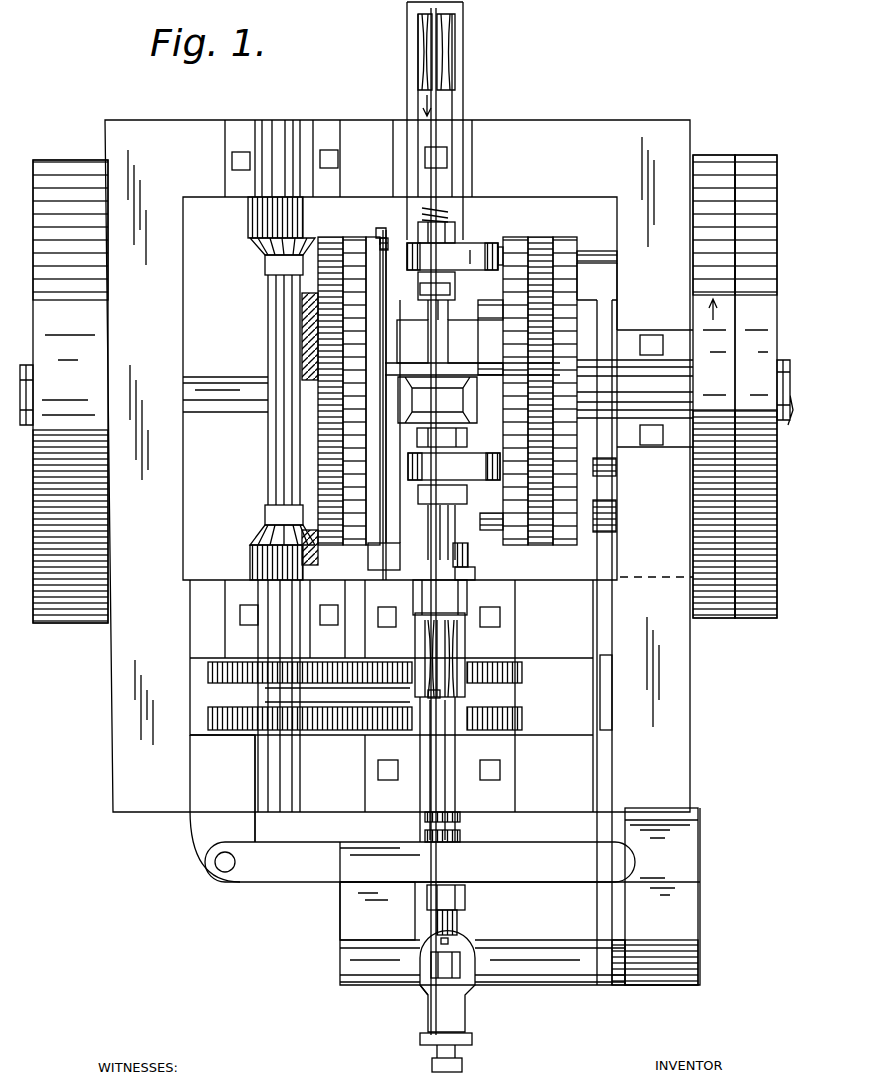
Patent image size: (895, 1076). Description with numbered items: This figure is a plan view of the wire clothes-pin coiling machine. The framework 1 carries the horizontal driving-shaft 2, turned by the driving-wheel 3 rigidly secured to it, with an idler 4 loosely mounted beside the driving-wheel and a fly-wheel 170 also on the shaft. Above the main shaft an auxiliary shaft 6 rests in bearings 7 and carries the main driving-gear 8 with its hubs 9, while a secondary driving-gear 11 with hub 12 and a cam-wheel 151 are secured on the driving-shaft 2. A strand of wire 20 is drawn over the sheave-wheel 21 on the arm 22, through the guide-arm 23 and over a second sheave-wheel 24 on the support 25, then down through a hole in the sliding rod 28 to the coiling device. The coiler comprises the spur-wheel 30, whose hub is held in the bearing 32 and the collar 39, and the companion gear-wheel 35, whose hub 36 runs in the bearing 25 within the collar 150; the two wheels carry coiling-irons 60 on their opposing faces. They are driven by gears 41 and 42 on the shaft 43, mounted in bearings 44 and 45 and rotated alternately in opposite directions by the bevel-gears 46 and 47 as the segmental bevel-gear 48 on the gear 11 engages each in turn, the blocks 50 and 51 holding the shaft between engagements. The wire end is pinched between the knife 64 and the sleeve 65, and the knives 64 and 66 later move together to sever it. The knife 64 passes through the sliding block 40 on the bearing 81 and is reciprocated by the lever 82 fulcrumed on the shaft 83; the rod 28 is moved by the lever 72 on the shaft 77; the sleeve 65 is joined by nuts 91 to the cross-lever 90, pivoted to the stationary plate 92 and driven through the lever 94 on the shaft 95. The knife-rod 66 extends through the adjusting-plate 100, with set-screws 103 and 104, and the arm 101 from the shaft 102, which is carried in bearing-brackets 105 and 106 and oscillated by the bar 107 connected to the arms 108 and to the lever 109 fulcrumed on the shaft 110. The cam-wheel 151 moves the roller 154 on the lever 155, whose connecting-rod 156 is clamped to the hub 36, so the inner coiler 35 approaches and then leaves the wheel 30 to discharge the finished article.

The framework 1 is at (402, 552).
The driving-shaft 2 is at (214, 384).
The driving-wheel 3 is at (714, 386).
The idler 4 is at (756, 386).
The auxiliary shaft 6 is at (790, 420).
The bearings 7 is at (468, 435).
The main driving-gear 8 is at (540, 238).
The hubs 9 is at (485, 363).
The secondary driving-gear 11 is at (328, 242).
The hub 12 is at (396, 366).
The strand of wire 20 is at (437, 128).
The sheave-wheel 21 is at (443, 35).
The arm 22 is at (463, 62).
The guide-arm 23 is at (420, 287).
The sheave-wheel 24 is at (466, 648).
The support 25 is at (418, 598).
The sliding rod 28 is at (455, 522).
The spur-wheel 30 is at (522, 715).
The bearing 32 is at (439, 760).
The companion gear-wheel 35 is at (522, 672).
The hub 36 is at (468, 578).
The collar 39 is at (462, 818).
The sliding block 40 is at (437, 400).
The gear 41 is at (222, 710).
The gear 42 is at (222, 666).
The shaft 43 is at (278, 437).
The bearing 44 is at (368, 606).
The bearing 45 is at (284, 149).
The bevel-gear 46 is at (258, 558).
The bevel-gear 47 is at (258, 213).
The segmental bevel-gear 48 is at (305, 345).
The block 50 is at (268, 519).
The block 51 is at (268, 268).
The coiling-irons 60 is at (425, 694).
The knife 64 is at (448, 212).
The sleeve 65 is at (462, 834).
The knife-rod 66 is at (457, 927).
The lever 72 is at (454, 478).
The shaft 77 is at (617, 465).
The bearing 81 is at (463, 341).
The lever 82 is at (452, 256).
The shaft 83 is at (392, 238).
The cross-lever 90 is at (420, 862).
The nuts 91 is at (425, 905).
The stationary plate 92 is at (222, 788).
The lever 94 is at (617, 513).
The shaft 95 is at (493, 530).
The adjusting-plate 100 is at (462, 985).
The arm 101 is at (426, 990).
The shaft 102 is at (545, 948).
The set-screws 103 is at (430, 1065).
The set-screws 104 is at (450, 941).
The bearing-bracket 105 is at (340, 930).
The bearing-bracket 106 is at (661, 896).
The bar 107 is at (612, 762).
The arms 108 is at (618, 985).
The lever 109 is at (612, 300).
The shaft 110 is at (487, 306).
The collar 150 is at (470, 563).
The cam-wheel 151 is at (357, 391).
The roller 154 is at (366, 262).
The lever 155 is at (378, 232).
The connecting-rod 156 is at (375, 545).
The fly-wheel 170 is at (64, 391).